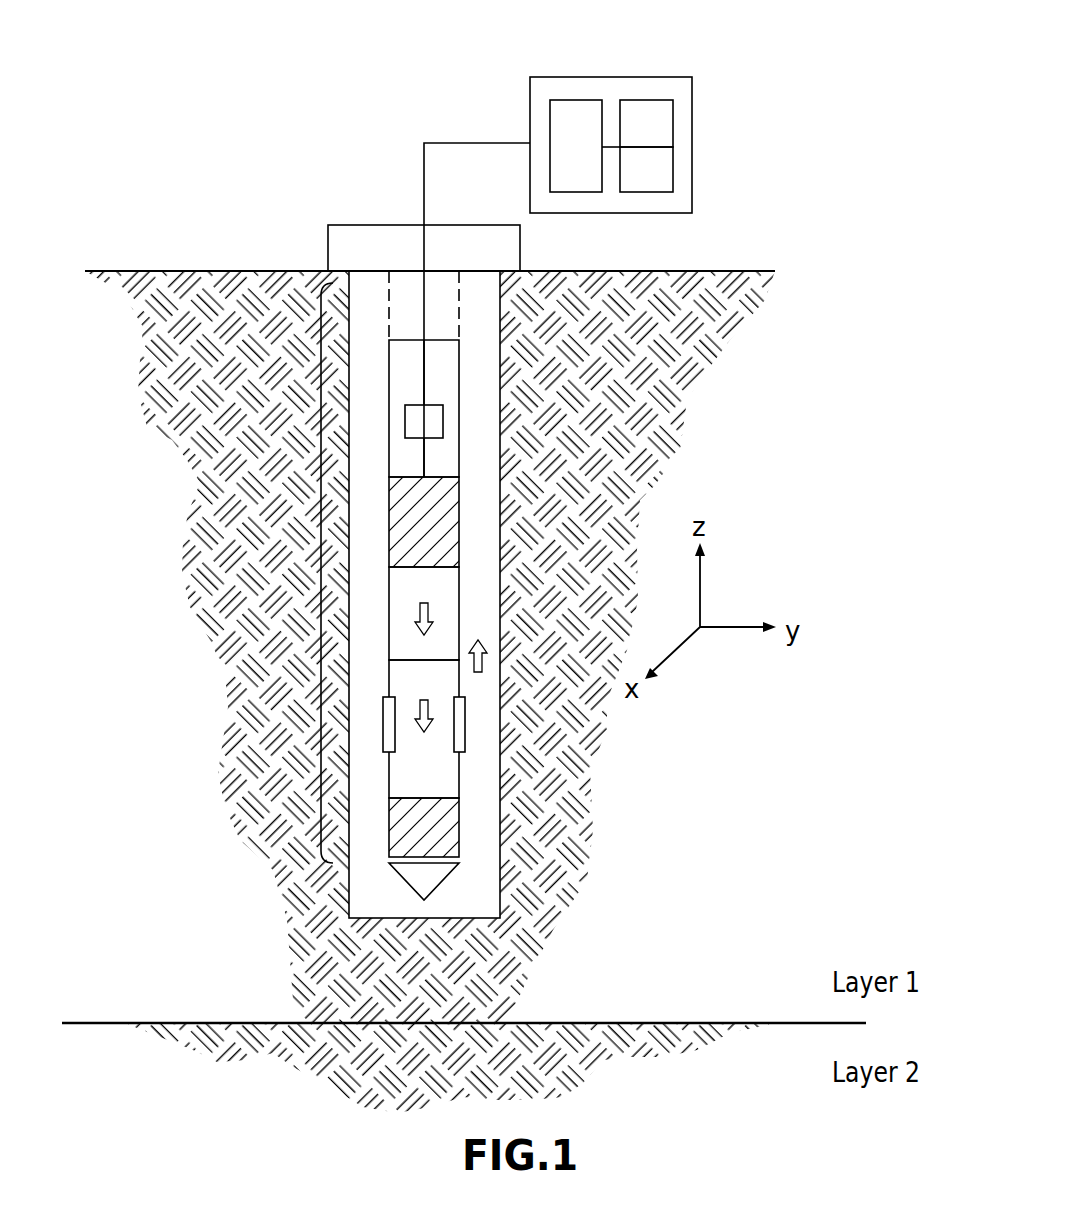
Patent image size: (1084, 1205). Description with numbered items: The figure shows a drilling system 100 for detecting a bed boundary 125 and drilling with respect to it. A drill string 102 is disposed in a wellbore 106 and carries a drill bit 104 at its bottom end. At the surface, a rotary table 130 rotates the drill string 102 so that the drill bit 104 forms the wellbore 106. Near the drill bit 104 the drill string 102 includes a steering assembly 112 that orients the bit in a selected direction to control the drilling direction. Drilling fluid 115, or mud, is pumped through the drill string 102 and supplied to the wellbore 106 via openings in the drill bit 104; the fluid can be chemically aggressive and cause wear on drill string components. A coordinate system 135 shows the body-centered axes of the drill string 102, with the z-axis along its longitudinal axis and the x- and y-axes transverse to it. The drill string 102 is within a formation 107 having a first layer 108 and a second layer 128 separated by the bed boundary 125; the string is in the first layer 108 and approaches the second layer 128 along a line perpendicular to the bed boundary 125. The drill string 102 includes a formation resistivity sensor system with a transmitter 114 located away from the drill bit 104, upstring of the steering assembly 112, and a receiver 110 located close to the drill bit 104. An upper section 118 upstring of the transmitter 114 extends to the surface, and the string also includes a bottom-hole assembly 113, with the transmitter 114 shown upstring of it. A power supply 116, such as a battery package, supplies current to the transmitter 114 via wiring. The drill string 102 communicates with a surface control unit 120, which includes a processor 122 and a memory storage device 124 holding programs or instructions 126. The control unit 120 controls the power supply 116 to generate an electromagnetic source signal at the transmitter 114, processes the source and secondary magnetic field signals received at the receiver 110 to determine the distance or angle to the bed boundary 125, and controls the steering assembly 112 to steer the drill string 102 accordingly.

The drilling system 100 is at (135, 188).
The drill string 102 is at (418, 585).
The drill bit 104 is at (445, 886).
The wellbore 106 is at (345, 450).
The formation 107 is at (957, 589).
The first layer 108 is at (724, 960).
The receiver 110 is at (459, 827).
The steering assembly 112 is at (459, 762).
The bottom-hole assembly 113 is at (389, 618).
The transmitter 114 is at (459, 522).
The drilling fluid 115 is at (535, 647).
The power supply 116 is at (443, 421).
The upper section 118 is at (389, 410).
The control unit 120 is at (651, 107).
The processor 122 is at (576, 100).
The memory storage device 124 is at (673, 121).
The programs or instructions 126 is at (673, 164).
The bed boundary 125 is at (158, 1023).
The second layer 128 is at (724, 1110).
The rotary table 130 is at (366, 224).
The coordinate system 135 is at (749, 447).